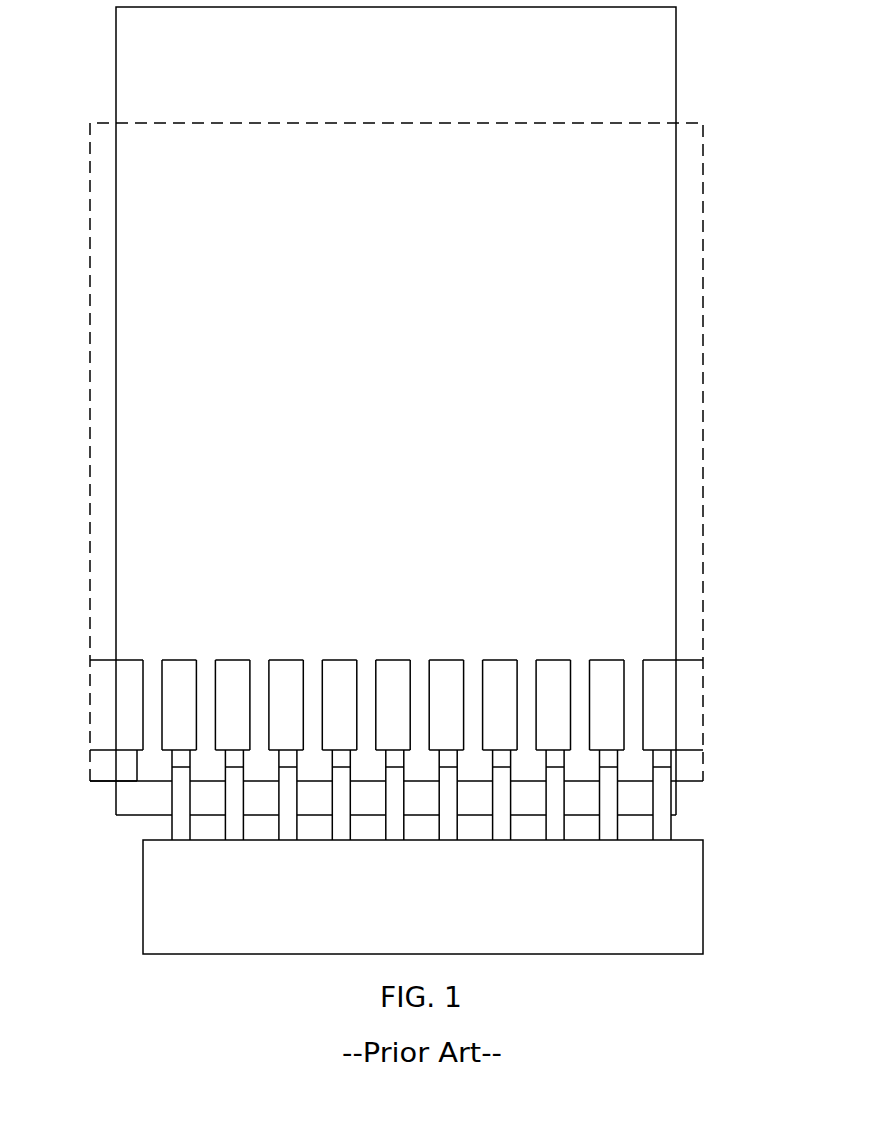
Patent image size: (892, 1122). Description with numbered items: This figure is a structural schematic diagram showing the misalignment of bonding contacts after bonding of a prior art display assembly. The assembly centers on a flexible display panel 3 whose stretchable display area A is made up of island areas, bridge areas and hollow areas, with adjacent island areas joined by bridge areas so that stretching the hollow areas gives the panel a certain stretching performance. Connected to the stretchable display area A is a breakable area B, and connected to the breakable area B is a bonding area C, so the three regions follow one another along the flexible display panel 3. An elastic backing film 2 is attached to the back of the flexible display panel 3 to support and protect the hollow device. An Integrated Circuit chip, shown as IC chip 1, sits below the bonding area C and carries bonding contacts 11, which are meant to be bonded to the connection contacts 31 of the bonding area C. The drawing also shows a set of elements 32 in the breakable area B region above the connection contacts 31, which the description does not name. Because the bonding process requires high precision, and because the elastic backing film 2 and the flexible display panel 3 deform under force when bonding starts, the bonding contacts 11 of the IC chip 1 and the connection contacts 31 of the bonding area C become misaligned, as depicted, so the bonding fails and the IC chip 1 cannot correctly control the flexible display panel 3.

The IC chip 1 is at (683, 917).
The bonding contacts 11 is at (177, 828).
The elastic backing film 2 is at (642, 85).
The flexible display panel 3 is at (767, 632).
The connection contacts 31 is at (147, 767).
The conductive fingers 32 is at (152, 697).
The stretchable display area A is at (692, 643).
The breakable area B is at (688, 717).
The bonding area C is at (688, 763).